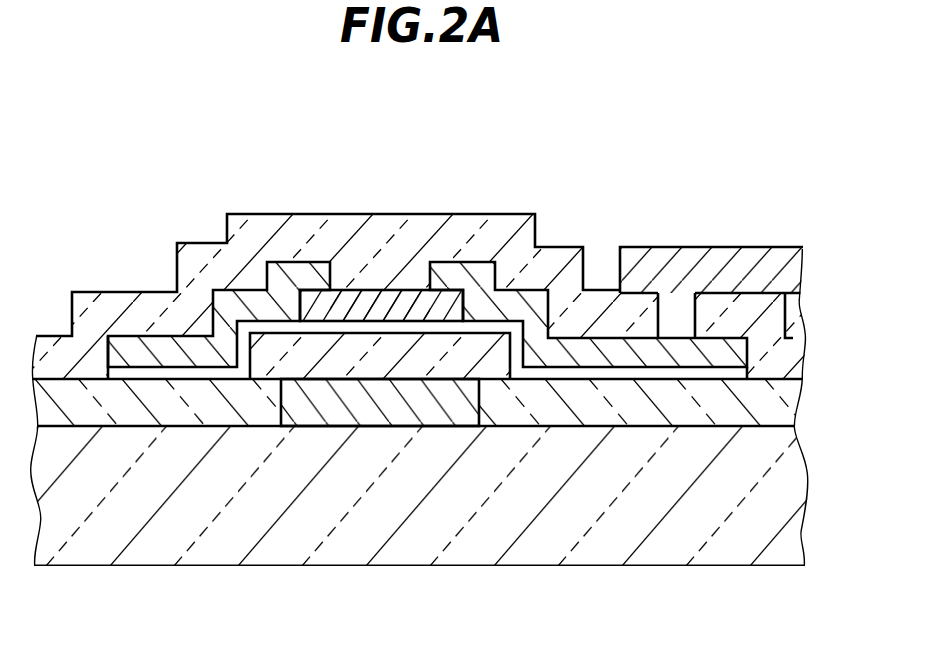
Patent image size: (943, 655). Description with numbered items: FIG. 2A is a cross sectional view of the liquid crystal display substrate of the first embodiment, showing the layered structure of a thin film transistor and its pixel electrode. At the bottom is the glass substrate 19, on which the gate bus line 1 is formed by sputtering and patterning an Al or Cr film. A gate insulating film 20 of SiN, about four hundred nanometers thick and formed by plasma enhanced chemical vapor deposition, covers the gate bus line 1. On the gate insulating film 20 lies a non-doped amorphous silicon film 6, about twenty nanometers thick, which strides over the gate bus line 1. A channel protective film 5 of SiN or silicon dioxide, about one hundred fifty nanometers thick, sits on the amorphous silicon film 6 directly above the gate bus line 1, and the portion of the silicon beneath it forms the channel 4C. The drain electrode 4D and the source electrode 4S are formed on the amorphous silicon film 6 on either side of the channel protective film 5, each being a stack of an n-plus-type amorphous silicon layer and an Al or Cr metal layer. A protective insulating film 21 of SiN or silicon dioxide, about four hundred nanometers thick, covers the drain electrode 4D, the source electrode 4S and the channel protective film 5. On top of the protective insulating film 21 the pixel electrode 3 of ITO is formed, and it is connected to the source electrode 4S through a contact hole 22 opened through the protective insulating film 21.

The gate bus line 1 is at (375, 423).
The pixel electrode 3 is at (755, 255).
The drain electrode 4D is at (294, 268).
The source electrode 4S is at (537, 302).
The channel region 4C is at (352, 300).
The channel protective film 5 is at (410, 300).
The amorphous silicon film 6 is at (788, 337).
The glass substrate 19 is at (798, 487).
The gate insulating film 20 is at (798, 408).
The protective insulating film 21 is at (125, 295).
The contact hole 22 is at (659, 321).